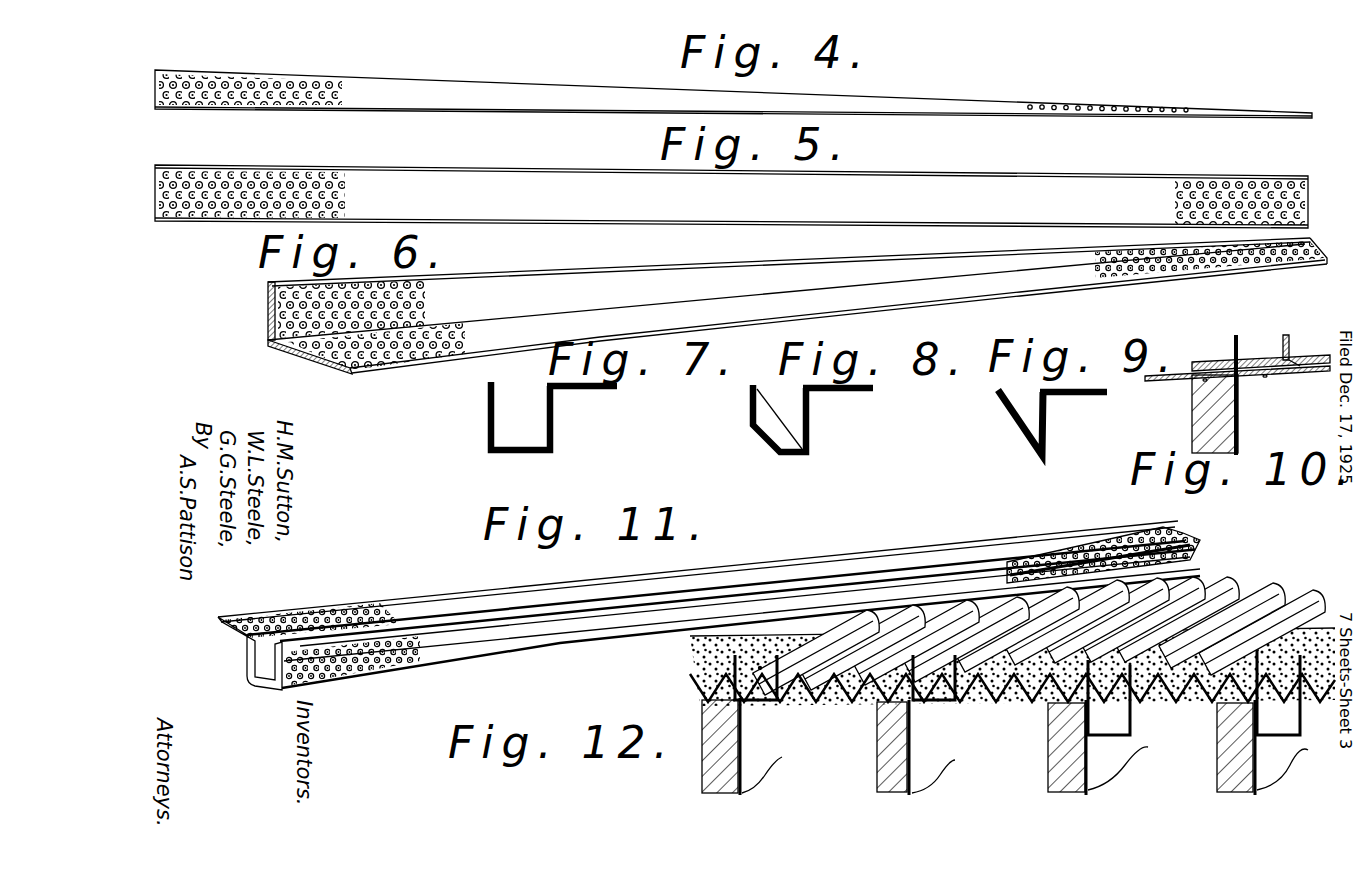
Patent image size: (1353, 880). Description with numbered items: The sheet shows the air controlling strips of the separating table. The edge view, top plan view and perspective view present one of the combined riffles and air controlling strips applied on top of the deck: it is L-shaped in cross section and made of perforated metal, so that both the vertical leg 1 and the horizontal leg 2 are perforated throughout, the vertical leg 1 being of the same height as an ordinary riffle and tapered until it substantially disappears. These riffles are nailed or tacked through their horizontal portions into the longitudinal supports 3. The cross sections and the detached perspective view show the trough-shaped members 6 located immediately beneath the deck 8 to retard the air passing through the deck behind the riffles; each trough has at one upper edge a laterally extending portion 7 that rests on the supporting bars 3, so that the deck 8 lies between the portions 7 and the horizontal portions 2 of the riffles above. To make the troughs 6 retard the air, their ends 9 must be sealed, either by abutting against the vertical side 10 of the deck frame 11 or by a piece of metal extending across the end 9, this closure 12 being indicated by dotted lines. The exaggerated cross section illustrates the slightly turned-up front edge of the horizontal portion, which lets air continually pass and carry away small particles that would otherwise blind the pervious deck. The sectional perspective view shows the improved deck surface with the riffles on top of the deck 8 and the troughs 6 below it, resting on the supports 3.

In FIG. 4, the vertical leg 1 is at (471, 109).
In FIG. 5, the vertical leg 1 is at (972, 178).
In FIG. 6, the vertical leg 1 is at (561, 284).
In FIG. 10, the vertical leg 1 is at (1283, 373).
In FIG. 12, the vertical leg 1 is at (985, 728).
In FIG. 4, the horizontal leg 2 is at (401, 86).
In FIG. 5, the horizontal leg 2 is at (365, 187).
In FIG. 6, the horizontal leg 2 is at (801, 305).
In FIG. 10, the horizontal leg 2 is at (1283, 345).
In FIG. 12, the horizontal leg 2 is at (745, 676).
In FIG. 10, the longitudinal supports 3 is at (1230, 410).
In FIG. 12, the longitudinal supports 3 is at (745, 752).
In FIG. 7, the trough-shaped members 6 is at (520, 416).
In FIG. 8, the trough-shaped members 6 is at (752, 426).
In FIG. 9, the trough-shaped members 6 is at (1015, 420).
In FIG. 11, the trough-shaped members 6 is at (352, 619).
In FIG. 12, the trough-shaped members 6 is at (1017, 699).
In FIG. 7, the laterally extending portions 7 is at (594, 392).
In FIG. 8, the laterally extending portions 7 is at (866, 398).
In FIG. 9, the laterally extending portions 7 is at (1088, 400).
In FIG. 12, the laterally extending portions 7 is at (702, 700).
In FIG. 11, the deck 8 is at (300, 613).
In FIG. 12, the deck 8 is at (852, 702).
In FIG. 11, the ends of the troughs 9 is at (798, 605).
In FIG. 11, the vertical side of the deck frame 10 is at (1160, 531).
In FIG. 11, the deck frame 11 is at (252, 618).
In FIG. 11, the closure 12 is at (242, 640).